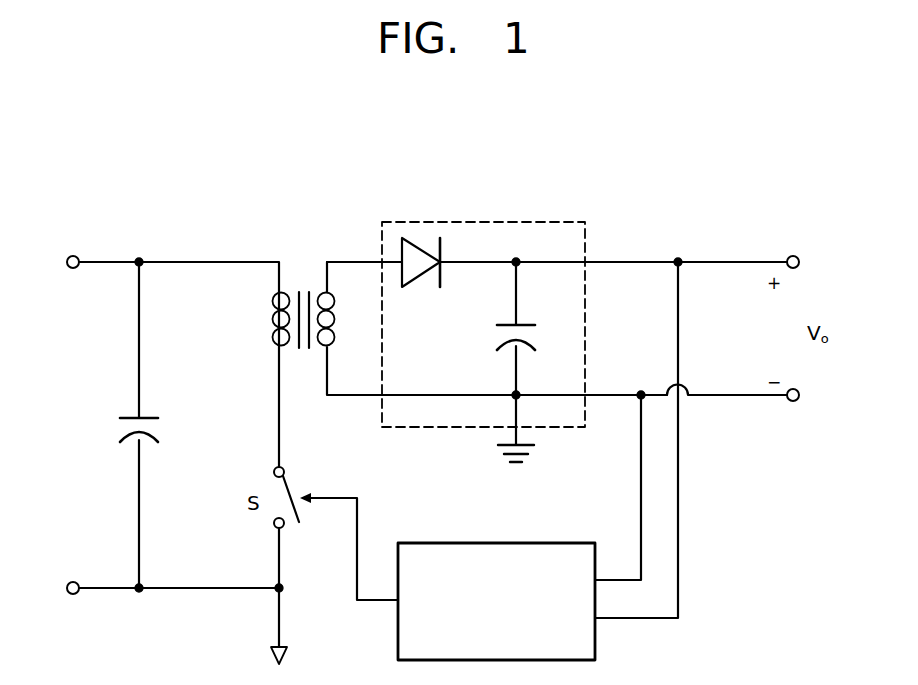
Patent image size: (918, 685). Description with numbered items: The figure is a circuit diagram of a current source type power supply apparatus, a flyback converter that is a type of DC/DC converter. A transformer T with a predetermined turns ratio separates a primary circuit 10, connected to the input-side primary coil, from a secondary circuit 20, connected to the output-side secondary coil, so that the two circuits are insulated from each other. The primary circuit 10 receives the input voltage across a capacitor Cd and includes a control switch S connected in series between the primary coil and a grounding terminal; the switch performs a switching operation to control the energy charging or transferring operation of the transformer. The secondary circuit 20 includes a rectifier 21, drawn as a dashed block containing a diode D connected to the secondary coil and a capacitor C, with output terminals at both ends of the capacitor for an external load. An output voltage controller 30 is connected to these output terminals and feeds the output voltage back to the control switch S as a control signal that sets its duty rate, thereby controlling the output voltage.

The primary circuit 10 is at (171, 245).
The secondary circuit 20 is at (346, 238).
The rectifier 21 is at (483, 221).
The output voltage controller 30 is at (522, 542).